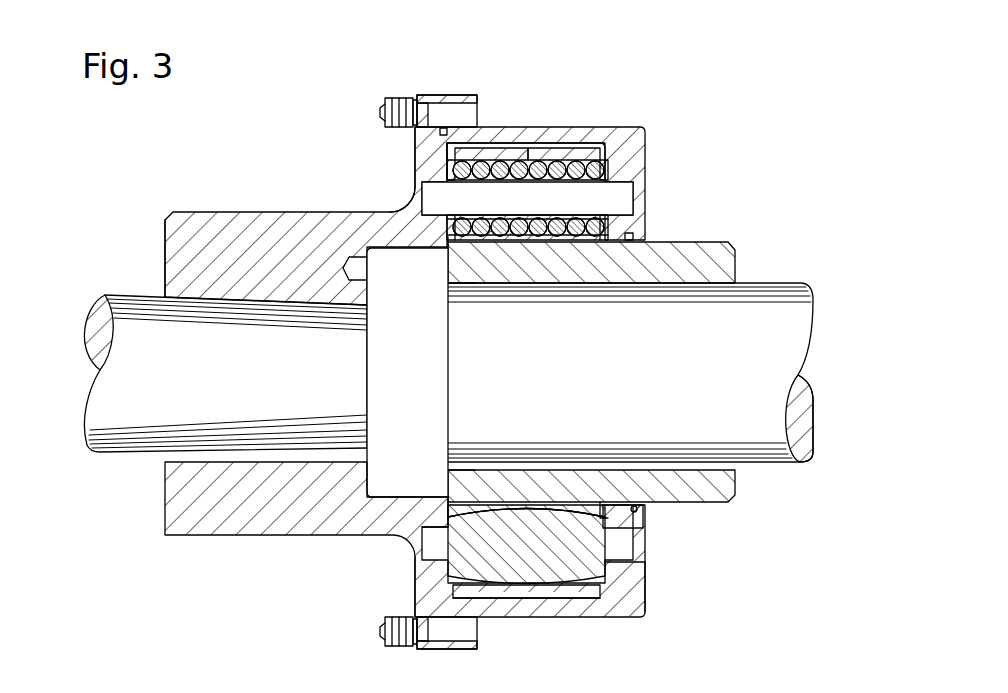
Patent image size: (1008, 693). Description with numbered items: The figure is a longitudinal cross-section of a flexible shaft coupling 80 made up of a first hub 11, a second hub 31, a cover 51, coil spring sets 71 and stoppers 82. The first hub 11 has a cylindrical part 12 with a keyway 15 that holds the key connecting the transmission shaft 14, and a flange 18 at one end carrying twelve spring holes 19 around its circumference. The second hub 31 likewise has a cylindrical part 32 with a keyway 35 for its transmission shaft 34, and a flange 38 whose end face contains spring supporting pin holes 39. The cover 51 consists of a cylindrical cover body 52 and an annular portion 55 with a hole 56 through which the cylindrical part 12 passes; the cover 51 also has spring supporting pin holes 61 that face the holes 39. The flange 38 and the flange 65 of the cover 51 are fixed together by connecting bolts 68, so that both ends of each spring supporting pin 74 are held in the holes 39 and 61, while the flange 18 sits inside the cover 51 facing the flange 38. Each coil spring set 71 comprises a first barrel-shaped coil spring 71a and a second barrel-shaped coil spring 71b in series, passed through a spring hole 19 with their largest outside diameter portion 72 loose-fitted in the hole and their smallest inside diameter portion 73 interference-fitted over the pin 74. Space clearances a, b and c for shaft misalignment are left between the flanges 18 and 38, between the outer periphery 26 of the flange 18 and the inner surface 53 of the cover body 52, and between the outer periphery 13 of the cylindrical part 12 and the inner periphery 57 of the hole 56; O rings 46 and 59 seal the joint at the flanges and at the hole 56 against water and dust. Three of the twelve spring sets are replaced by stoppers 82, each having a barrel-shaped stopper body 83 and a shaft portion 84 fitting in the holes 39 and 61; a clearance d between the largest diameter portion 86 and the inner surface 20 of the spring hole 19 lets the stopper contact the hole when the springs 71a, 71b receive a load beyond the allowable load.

The first hub 11 is at (701, 238).
The cylindrical part 12 is at (731, 251).
The outer periphery 13 is at (700, 505).
The transmission shaft 14 is at (452, 291).
The keyway 15 is at (456, 466).
The flange 18 is at (573, 152).
The spring holes 19 is at (597, 147).
The inner surface of the spring hole 20 is at (542, 162).
The outer periphery of the flange 26 is at (500, 150).
The second hub 31 is at (270, 208).
The cylindrical part 32 is at (207, 215).
The transmission shaft 34 is at (368, 310).
The keyway 35 is at (364, 446).
The flange 38 is at (428, 153).
The spring supporting pin holes 39 is at (420, 190).
The O ring 46 is at (440, 131).
The cover 51 is at (622, 624).
The cylindrical cover body 52 is at (583, 605).
The inner surface 53 is at (546, 600).
The annular portion 55 is at (641, 600).
The hole 56 is at (643, 508).
The inner periphery 57 is at (623, 505).
The O ring 59 is at (636, 507).
The spring supporting pin holes 61 is at (625, 565).
The flange 65 is at (466, 641).
The connecting bolts 68 is at (428, 631).
The coil spring set 71 is at (550, 248).
The first barrel-shaped coil spring 71a is at (493, 242).
The second barrel-shaped coil spring 71b is at (590, 240).
The largest outside diameter portion 72 is at (566, 240).
The smallest inside diameter portion 73 is at (522, 240).
The spring supporting pin 74 is at (630, 200).
The flexible shaft coupling 80 is at (308, 108).
The stopper 82 is at (507, 520).
The stopper body 83 is at (552, 523).
The shaft portion 84 is at (418, 558).
The largest diameter portion 86 is at (535, 508).
The space clearance a is at (445, 160).
The space clearance b is at (490, 143).
The space clearance c is at (610, 505).
The space clearance d is at (517, 588).